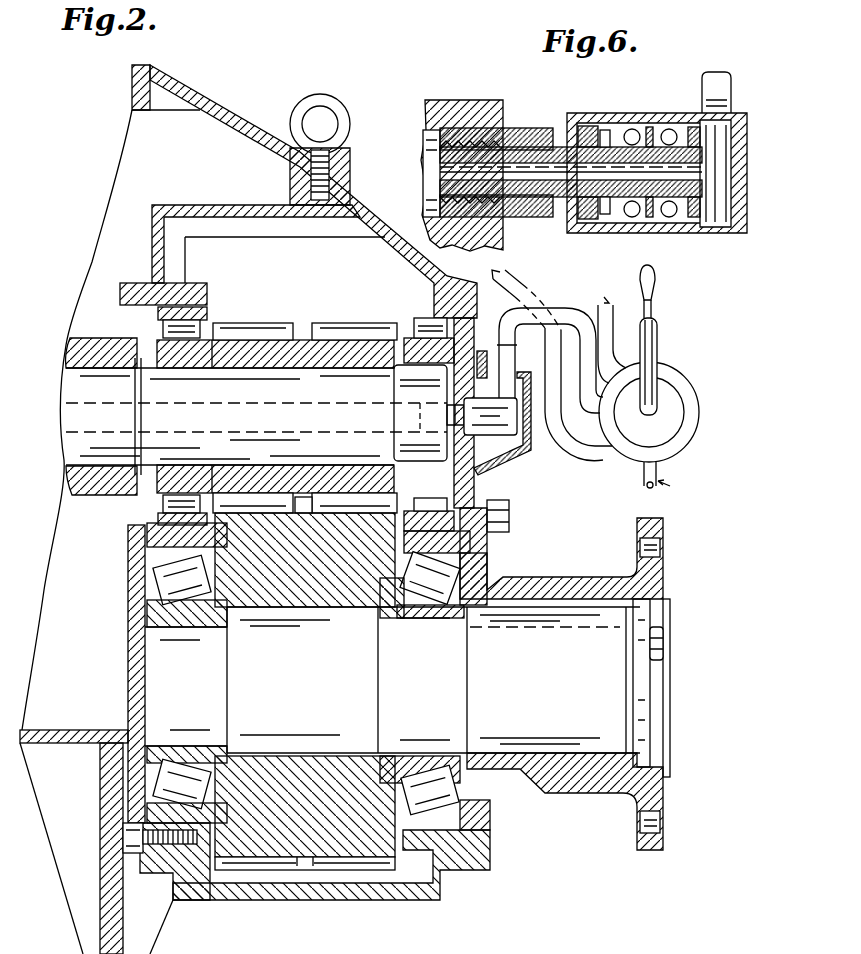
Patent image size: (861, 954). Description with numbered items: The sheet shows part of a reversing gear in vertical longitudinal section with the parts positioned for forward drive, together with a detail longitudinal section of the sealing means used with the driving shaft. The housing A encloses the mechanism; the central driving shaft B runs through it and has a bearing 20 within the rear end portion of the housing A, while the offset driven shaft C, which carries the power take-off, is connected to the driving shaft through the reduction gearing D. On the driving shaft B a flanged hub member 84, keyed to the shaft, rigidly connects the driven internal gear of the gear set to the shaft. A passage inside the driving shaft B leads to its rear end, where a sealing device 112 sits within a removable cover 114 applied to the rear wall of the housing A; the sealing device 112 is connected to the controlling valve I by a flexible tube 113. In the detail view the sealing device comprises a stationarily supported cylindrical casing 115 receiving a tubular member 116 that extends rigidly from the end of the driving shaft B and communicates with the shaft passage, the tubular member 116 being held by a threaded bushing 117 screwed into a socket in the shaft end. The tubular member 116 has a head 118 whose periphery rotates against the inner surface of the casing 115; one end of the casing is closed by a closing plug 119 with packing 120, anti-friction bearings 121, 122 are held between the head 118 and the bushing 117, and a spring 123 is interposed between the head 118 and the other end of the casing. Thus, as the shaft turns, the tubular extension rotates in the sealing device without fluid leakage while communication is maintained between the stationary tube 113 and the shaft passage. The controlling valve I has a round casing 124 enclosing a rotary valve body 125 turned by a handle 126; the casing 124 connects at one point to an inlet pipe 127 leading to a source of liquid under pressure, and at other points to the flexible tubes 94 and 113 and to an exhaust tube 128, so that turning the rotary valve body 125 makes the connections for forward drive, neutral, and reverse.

In FIG. 2, the housing A is at (194, 82).
In FIG. 2, the central driving shaft B is at (72, 390).
In FIG. 2, the offset driven shaft C is at (568, 689).
In FIG. 2, the reduction gearing D is at (255, 739).
In FIG. 2, the controlling valve I is at (659, 380).
In FIG. 2, the bearing 20 is at (214, 306).
In FIG. 2, the flanged hub member 84 is at (76, 352).
In FIG. 2, the flexible tube 94 is at (597, 452).
In FIG. 2, the sealing device 112 is at (497, 430).
In FIG. 6, the sealing device 112 is at (708, 240).
In FIG. 2, the flexible tube 113 is at (552, 312).
In FIG. 6, the flexible tube 113 is at (726, 98).
In FIG. 2, the removable cover 114 is at (487, 458).
In FIG. 6, the cylindrical casing 115 is at (664, 118).
In FIG. 6, the tubular member 116 is at (649, 130).
In FIG. 6, the threaded bushing 117 is at (528, 135).
In FIG. 6, the head 118 is at (690, 125).
In FIG. 6, the closing plug 119 is at (590, 122).
In FIG. 6, the packing 120 is at (600, 125).
In FIG. 6, the anti-friction bearing 121 is at (632, 218).
In FIG. 6, the anti-friction bearing 122 is at (668, 218).
In FIG. 6, the spring 123 is at (722, 185).
In FIG. 2, the round casing 124 is at (673, 372).
In FIG. 2, the rotary valve body 125 is at (668, 422).
In FIG. 2, the handle 126 is at (657, 310).
In FIG. 2, the inlet pipe 127 is at (608, 333).
In FIG. 2, the exhaust tube 128 is at (658, 466).